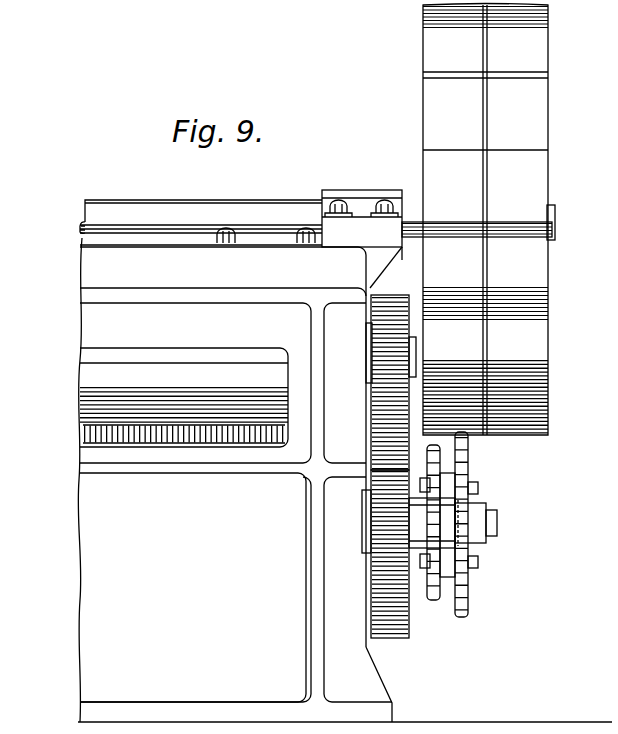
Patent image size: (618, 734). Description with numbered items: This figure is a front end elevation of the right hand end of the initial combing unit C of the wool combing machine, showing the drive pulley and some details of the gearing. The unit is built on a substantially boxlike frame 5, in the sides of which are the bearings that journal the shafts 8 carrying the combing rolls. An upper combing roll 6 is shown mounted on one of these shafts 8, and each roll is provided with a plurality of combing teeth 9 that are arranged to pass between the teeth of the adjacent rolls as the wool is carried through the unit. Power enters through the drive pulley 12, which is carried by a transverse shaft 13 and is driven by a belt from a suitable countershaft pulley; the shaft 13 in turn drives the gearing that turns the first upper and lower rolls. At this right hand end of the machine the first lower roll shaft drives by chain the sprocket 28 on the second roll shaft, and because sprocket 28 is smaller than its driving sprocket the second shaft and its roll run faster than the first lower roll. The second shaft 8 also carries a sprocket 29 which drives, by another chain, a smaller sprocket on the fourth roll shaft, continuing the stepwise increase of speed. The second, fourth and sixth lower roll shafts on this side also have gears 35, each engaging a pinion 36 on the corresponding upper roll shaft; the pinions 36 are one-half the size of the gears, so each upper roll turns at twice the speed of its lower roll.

The initial combing unit C is at (228, 456).
The frame 5 is at (193, 587).
The upper combing roll 6 is at (93, 384).
The shaft 8 is at (457, 512).
The combing teeth 9 is at (86, 432).
The drive pulley 12 is at (471, 220).
The transverse shaft 13 is at (566, 208).
The sprocket 28 is at (433, 597).
The sprocket 29 is at (470, 593).
The gear 35 is at (383, 640).
The pinion 36 is at (386, 296).